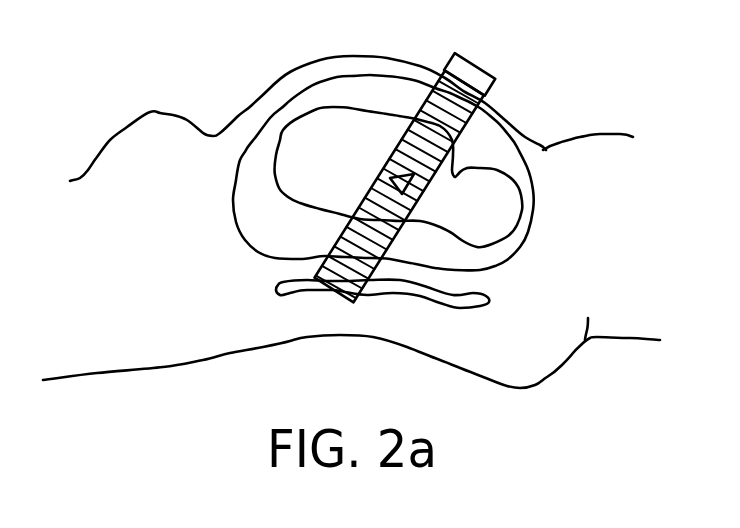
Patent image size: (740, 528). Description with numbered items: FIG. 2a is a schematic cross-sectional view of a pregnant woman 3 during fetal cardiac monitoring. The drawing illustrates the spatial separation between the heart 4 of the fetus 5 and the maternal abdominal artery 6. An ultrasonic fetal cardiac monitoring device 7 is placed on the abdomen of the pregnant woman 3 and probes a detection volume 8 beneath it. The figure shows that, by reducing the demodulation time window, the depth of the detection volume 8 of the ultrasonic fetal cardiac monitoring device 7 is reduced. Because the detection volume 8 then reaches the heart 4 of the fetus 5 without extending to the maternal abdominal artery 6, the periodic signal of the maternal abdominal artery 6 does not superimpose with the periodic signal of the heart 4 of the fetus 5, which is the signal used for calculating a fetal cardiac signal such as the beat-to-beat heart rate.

The pregnant woman 3 is at (323, 60).
The heart 4 is at (412, 175).
The fetus 5 is at (364, 152).
The maternal abdominal artery 6 is at (337, 285).
The ultrasonic fetal cardiac monitoring device 7 is at (477, 78).
The detection volume 8 is at (460, 120).